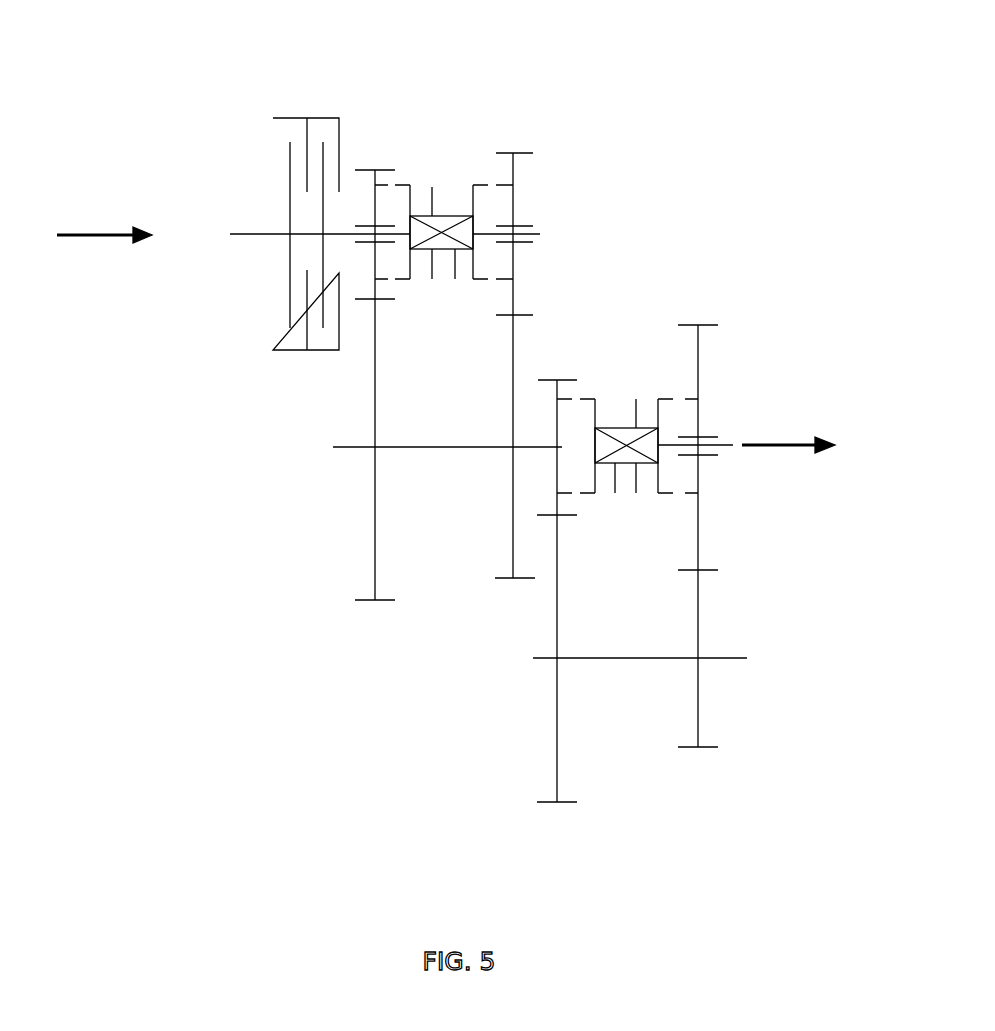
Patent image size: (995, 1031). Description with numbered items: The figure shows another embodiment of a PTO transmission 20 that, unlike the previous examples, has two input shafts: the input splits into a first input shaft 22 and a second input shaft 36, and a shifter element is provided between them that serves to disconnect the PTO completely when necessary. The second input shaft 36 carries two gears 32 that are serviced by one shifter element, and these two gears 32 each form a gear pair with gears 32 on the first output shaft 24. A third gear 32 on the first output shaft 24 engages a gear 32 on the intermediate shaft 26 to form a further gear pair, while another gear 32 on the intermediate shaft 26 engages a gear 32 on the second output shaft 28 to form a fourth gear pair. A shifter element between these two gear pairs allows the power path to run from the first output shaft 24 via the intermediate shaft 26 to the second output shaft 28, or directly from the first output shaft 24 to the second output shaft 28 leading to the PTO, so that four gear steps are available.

The PTO transmission 20 is at (730, 137).
The first input shaft 22 is at (237, 233).
The first output shaft 24 is at (360, 447).
The intermediate shaft 26 is at (725, 658).
The second output shaft 28 is at (722, 445).
The gear 32 is at (700, 630).
The second input shaft 36 is at (540, 234).